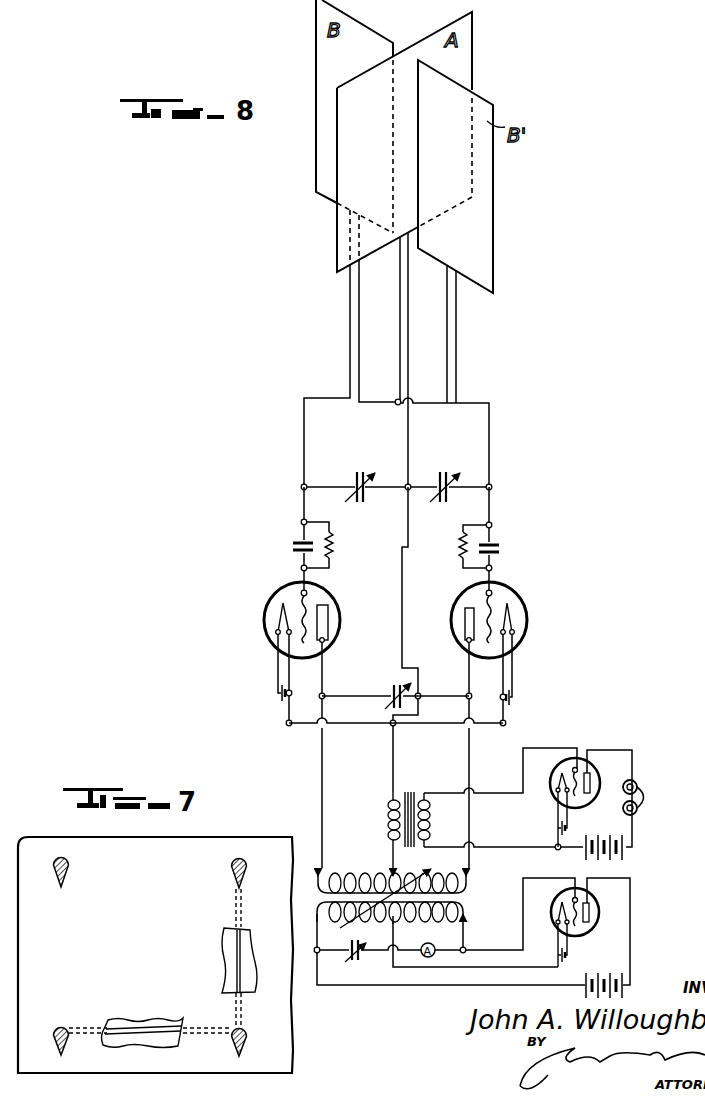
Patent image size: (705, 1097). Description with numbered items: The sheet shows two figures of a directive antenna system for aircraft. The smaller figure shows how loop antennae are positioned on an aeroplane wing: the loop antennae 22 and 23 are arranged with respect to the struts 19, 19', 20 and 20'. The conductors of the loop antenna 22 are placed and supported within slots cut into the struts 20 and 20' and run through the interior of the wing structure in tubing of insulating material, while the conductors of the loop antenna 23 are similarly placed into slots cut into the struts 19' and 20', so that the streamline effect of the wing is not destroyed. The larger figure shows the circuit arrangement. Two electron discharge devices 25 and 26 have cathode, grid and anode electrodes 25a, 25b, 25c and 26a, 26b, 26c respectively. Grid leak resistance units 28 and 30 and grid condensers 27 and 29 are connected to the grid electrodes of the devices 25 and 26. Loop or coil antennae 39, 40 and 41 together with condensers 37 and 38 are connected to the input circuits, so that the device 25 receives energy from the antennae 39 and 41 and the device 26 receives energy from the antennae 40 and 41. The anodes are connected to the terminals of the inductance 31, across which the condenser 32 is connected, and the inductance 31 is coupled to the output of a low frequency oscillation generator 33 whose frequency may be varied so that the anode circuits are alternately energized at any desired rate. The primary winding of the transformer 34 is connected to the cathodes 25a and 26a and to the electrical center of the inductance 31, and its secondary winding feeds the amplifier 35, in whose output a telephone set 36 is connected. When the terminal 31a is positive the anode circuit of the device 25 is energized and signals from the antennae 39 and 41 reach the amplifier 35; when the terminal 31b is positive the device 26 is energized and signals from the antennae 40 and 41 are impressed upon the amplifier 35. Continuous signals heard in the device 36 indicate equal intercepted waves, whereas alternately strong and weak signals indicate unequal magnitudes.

In FIG. 7, the strut 19 is at (73, 873).
In FIG. 7, the strut 19' is at (255, 873).
In FIG. 7, the strut 20 is at (47, 1030).
In FIG. 7, the strut 20' is at (215, 1048).
In FIG. 7, the loop antenna 22 is at (136, 1027).
In FIG. 7, the loop antenna 23 is at (237, 947).
In FIG. 8, the electron discharge device 25 is at (292, 612).
In FIG. 8, the cathode electrode 25a is at (276, 627).
In FIG. 8, the grid electrode 25b is at (298, 606).
In FIG. 8, the anode electrode 25c is at (325, 623).
In FIG. 8, the electron discharge device 26 is at (489, 618).
In FIG. 8, the cathode electrode 26a is at (514, 618).
In FIG. 8, the grid electrode 26b is at (482, 608).
In FIG. 8, the anode electrode 26c is at (465, 620).
In FIG. 8, the grid condenser 27 is at (285, 547).
In FIG. 8, the grid leak resistance unit 28 is at (339, 544).
In FIG. 8, the grid condenser 29 is at (504, 547).
In FIG. 8, the grid leak resistance unit 30 is at (451, 548).
In FIG. 8, the inductance 31 is at (396, 874).
In FIG. 8, the terminal of inductance 31a is at (316, 876).
In FIG. 8, the terminal of inductance 31b is at (470, 878).
In FIG. 8, the condenser 32 is at (389, 679).
In FIG. 8, the low frequency oscillation generator 33 is at (377, 959).
In FIG. 8, the transformer 34 is at (413, 785).
In FIG. 8, the amplifier 35 is at (610, 762).
In FIG. 8, the telephone set 36 is at (644, 786).
In FIG. 8, the condenser 37 is at (355, 470).
In FIG. 8, the condenser 38 is at (442, 472).
In FIG. 8, the loop antenna 39 is at (314, 148).
In FIG. 8, the loop antenna 40 is at (496, 229).
In FIG. 8, the loop antenna 41 is at (333, 238).